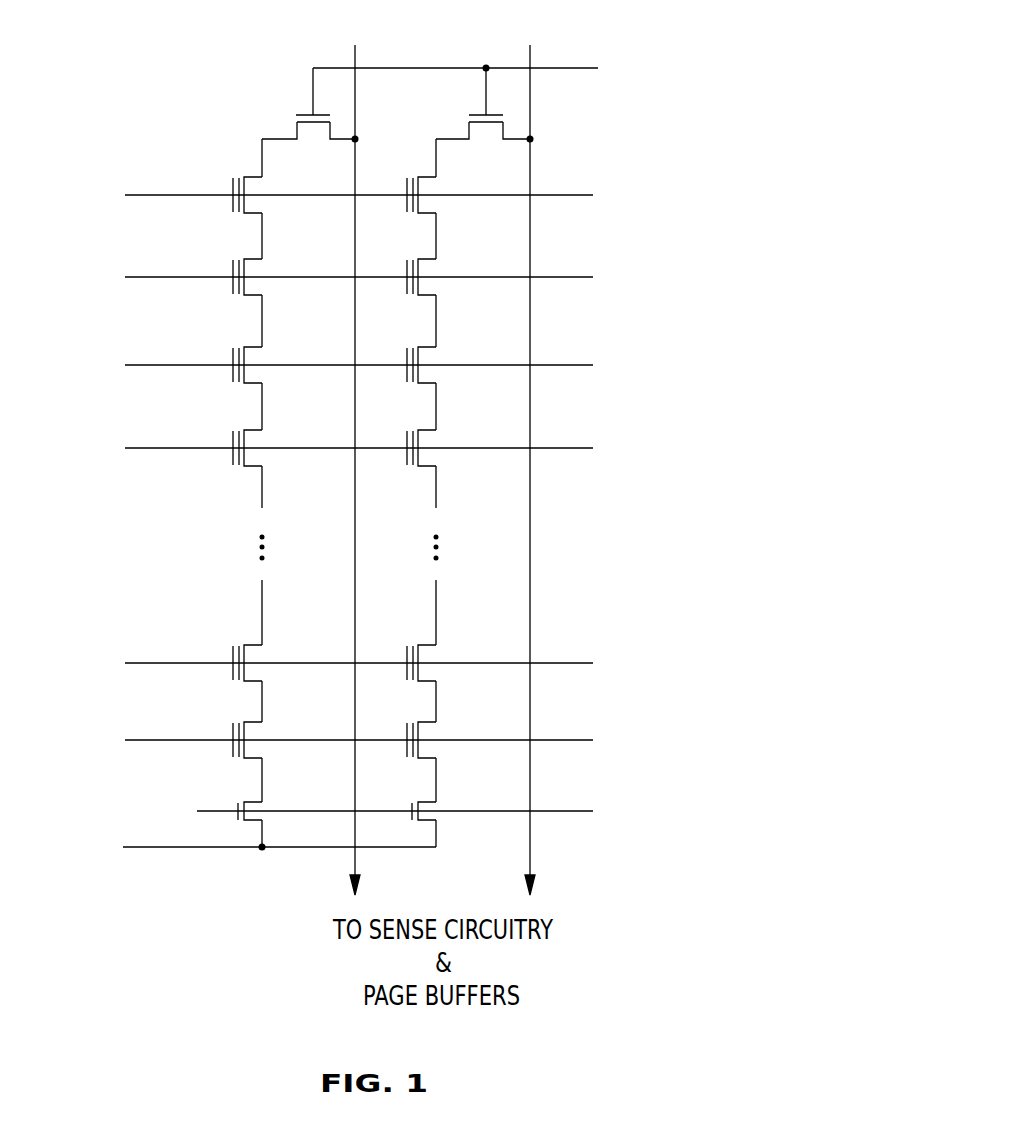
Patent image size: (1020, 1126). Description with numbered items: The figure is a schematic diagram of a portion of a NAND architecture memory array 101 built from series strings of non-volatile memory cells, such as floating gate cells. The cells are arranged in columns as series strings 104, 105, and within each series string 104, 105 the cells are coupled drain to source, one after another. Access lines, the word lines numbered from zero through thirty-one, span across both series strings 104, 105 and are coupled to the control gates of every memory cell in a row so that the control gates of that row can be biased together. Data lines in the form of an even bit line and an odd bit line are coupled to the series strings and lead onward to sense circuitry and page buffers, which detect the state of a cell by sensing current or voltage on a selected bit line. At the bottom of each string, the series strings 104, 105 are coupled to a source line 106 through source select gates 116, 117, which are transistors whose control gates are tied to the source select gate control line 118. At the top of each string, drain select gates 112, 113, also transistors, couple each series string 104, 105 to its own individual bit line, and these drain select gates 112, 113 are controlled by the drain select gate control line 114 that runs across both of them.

The memory array 101 is at (206, 112).
The series string 104 is at (238, 482).
The series string 105 is at (447, 483).
The source line 106 is at (120, 857).
The drain select gate 112 is at (296, 114).
The drain select gate 113 is at (469, 114).
The drain select gate control line 114 is at (582, 67).
The source select gate 116 is at (243, 827).
The source select gate 117 is at (418, 827).
The source select gate control line 118 is at (578, 811).